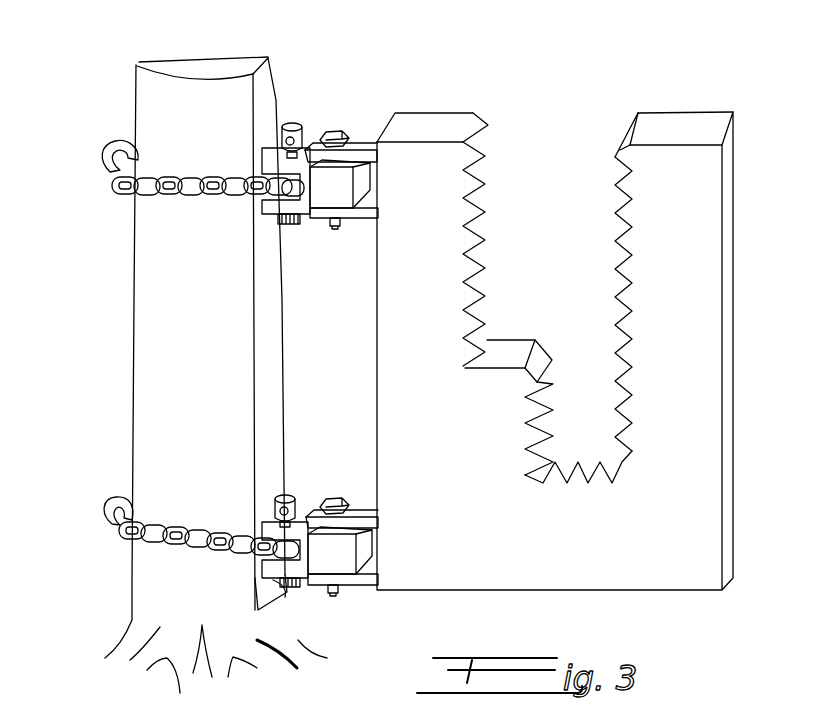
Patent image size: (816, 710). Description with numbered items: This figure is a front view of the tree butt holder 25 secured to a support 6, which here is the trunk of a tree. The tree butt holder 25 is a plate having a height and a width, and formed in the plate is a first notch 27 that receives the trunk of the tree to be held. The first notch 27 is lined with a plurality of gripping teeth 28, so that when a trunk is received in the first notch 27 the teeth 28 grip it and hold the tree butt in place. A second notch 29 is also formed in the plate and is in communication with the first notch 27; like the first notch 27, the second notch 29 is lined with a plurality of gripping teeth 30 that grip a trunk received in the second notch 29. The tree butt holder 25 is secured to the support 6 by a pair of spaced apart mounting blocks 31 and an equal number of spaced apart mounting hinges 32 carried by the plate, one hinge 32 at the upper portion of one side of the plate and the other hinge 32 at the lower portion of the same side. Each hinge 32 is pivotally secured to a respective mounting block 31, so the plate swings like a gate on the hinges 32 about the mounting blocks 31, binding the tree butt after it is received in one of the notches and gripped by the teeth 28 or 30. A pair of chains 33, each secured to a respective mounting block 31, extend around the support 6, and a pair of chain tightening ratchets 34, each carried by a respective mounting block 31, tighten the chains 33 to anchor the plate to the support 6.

The support 6 is at (166, 336).
The tree butt holder 25 is at (583, 110).
The first notch 27 is at (495, 186).
The gripping teeth 28 is at (620, 246).
The second notch 29 is at (583, 376).
The gripping teeth 30 is at (618, 398).
The mounting block 31 is at (332, 180).
The mounting hinge 32 is at (364, 142).
The chain 33 is at (192, 175).
The chain tightening ratchet 34 is at (299, 120).